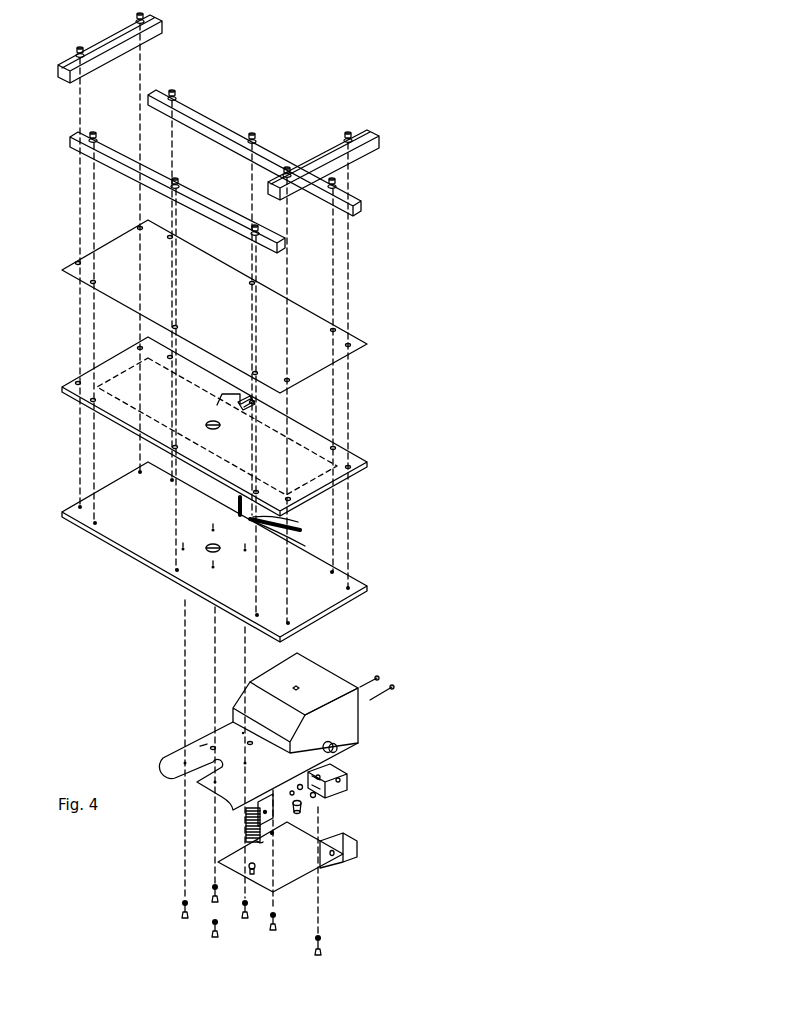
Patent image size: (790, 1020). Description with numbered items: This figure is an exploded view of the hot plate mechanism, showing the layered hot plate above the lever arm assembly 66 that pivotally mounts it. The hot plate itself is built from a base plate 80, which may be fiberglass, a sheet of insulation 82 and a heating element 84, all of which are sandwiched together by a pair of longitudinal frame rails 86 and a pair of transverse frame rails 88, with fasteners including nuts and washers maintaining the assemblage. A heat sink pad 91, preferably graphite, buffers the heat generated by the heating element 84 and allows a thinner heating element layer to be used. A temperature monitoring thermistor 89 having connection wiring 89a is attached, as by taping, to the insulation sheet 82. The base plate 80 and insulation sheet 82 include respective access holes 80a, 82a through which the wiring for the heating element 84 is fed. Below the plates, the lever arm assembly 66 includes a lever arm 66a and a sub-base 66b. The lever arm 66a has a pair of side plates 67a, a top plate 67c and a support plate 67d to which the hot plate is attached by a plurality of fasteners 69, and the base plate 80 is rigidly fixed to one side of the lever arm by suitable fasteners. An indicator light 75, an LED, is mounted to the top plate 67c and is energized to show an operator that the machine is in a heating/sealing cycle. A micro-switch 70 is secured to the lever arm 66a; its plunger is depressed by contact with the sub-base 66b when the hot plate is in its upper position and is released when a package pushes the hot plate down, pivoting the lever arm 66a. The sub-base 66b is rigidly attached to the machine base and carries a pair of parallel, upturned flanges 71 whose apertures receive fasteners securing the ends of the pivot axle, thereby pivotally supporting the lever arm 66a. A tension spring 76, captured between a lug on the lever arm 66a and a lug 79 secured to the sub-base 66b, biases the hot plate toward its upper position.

The transverse frame rails 88 is at (112, 37).
The longitudinal frame rails 86 is at (201, 115).
The heating element 84 is at (112, 272).
The sheet of insulation 82 is at (118, 387).
The heat sink pad 91 is at (350, 495).
The access hole 82a is at (220, 425).
The temperature monitoring thermistor 89 is at (217, 405).
The base plate 80 is at (120, 516).
The access hole 80a is at (220, 548).
The connection wiring 89a is at (238, 508).
The lever arm assembly 66 is at (283, 710).
The top plate 67c is at (315, 683).
The side plates 67a is at (347, 727).
The lever arm 66a is at (170, 748).
The support plate 67d is at (203, 747).
The micro-switch 70 is at (343, 787).
The indicator light 75 is at (305, 807).
The tension spring 76 is at (260, 843).
The sub-base 66b is at (340, 875).
The upturned flanges 71 is at (338, 860).
The lug 79 is at (252, 874).
The fasteners 69 is at (182, 922).